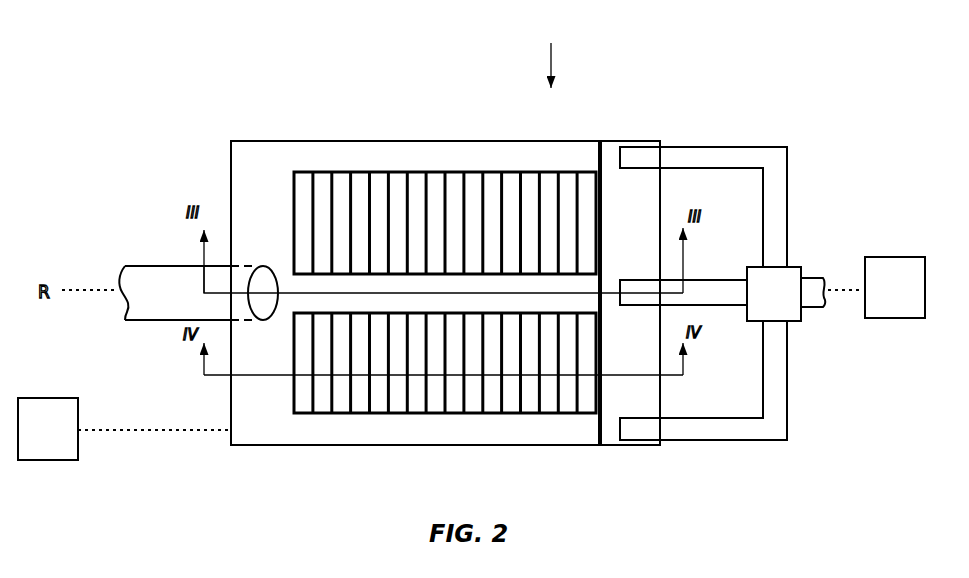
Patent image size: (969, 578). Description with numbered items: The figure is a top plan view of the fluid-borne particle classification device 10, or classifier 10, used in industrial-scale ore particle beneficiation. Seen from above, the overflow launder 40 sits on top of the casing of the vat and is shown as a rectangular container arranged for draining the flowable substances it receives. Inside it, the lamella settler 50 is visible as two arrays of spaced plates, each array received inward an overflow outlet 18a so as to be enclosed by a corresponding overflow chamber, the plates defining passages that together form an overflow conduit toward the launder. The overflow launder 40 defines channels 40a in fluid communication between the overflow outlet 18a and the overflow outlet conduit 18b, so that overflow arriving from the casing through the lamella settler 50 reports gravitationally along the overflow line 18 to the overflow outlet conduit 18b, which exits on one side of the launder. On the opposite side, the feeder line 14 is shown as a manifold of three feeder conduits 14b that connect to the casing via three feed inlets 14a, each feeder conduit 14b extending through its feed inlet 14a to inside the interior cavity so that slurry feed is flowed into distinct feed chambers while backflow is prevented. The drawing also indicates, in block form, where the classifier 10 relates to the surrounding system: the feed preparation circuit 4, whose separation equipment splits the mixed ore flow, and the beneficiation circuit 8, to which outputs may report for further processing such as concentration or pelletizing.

The fluid-borne particle classification device 10 is at (194, 73).
The overflow line 18 is at (162, 241).
The overflow outlet conduit 18b is at (138, 266).
The overflow outlet 18a is at (296, 177).
The lamella settler 50 is at (433, 165).
The overflow launder 40 is at (273, 458).
The channels 40a is at (462, 443).
The feeder line 14 is at (717, 259).
The feed inlet 14a is at (620, 160).
The feeder conduit 14b is at (723, 147).
The feed preparation circuit 4 is at (895, 287).
The beneficiation circuit 8 is at (48, 429).